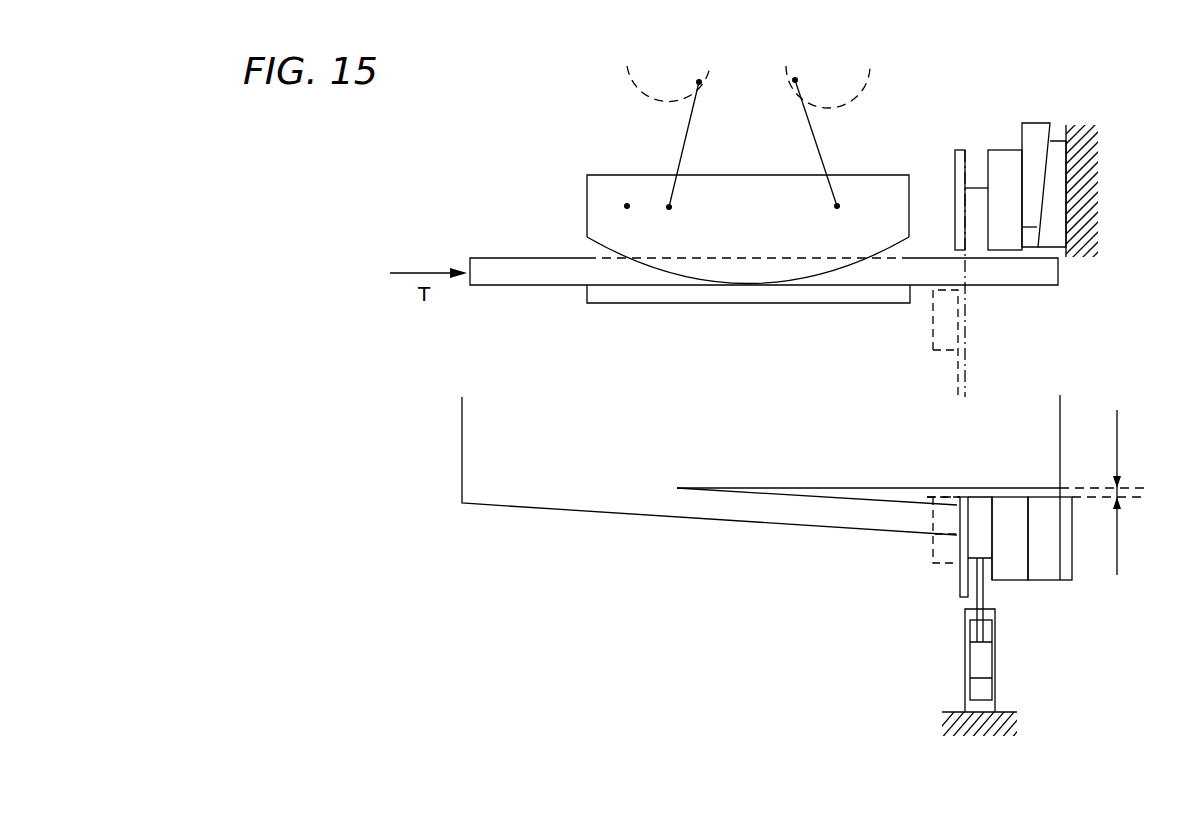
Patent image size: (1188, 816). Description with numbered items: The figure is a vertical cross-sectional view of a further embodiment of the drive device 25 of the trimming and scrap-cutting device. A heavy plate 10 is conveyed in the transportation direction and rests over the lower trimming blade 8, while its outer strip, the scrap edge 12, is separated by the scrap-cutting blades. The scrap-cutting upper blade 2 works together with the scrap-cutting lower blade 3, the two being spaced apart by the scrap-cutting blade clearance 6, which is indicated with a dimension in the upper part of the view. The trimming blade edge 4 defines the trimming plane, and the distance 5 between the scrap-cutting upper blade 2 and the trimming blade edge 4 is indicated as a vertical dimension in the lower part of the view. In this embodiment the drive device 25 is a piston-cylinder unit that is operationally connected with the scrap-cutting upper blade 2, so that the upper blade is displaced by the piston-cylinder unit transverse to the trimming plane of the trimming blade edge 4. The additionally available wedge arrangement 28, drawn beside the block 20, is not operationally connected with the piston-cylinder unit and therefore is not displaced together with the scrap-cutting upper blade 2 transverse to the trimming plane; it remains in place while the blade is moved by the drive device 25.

The scrap-cutting upper blade 2 is at (977, 205).
The scrap-cutting lower blade 3 is at (933, 323).
The trimming blade edge 4 is at (1062, 487).
The distance between the scrap-cutting upper blade and the trimming blade edge 5 is at (1140, 489).
The scrap-cutting blade clearance 6 is at (627, 204).
The lower trimming blade 8 is at (677, 306).
The heavy plate 10 is at (500, 268).
The scrap edge 12 is at (843, 518).
The block 20 is at (1010, 568).
The drive device 25 is at (995, 652).
The wedge arrangement 28 is at (1054, 141).